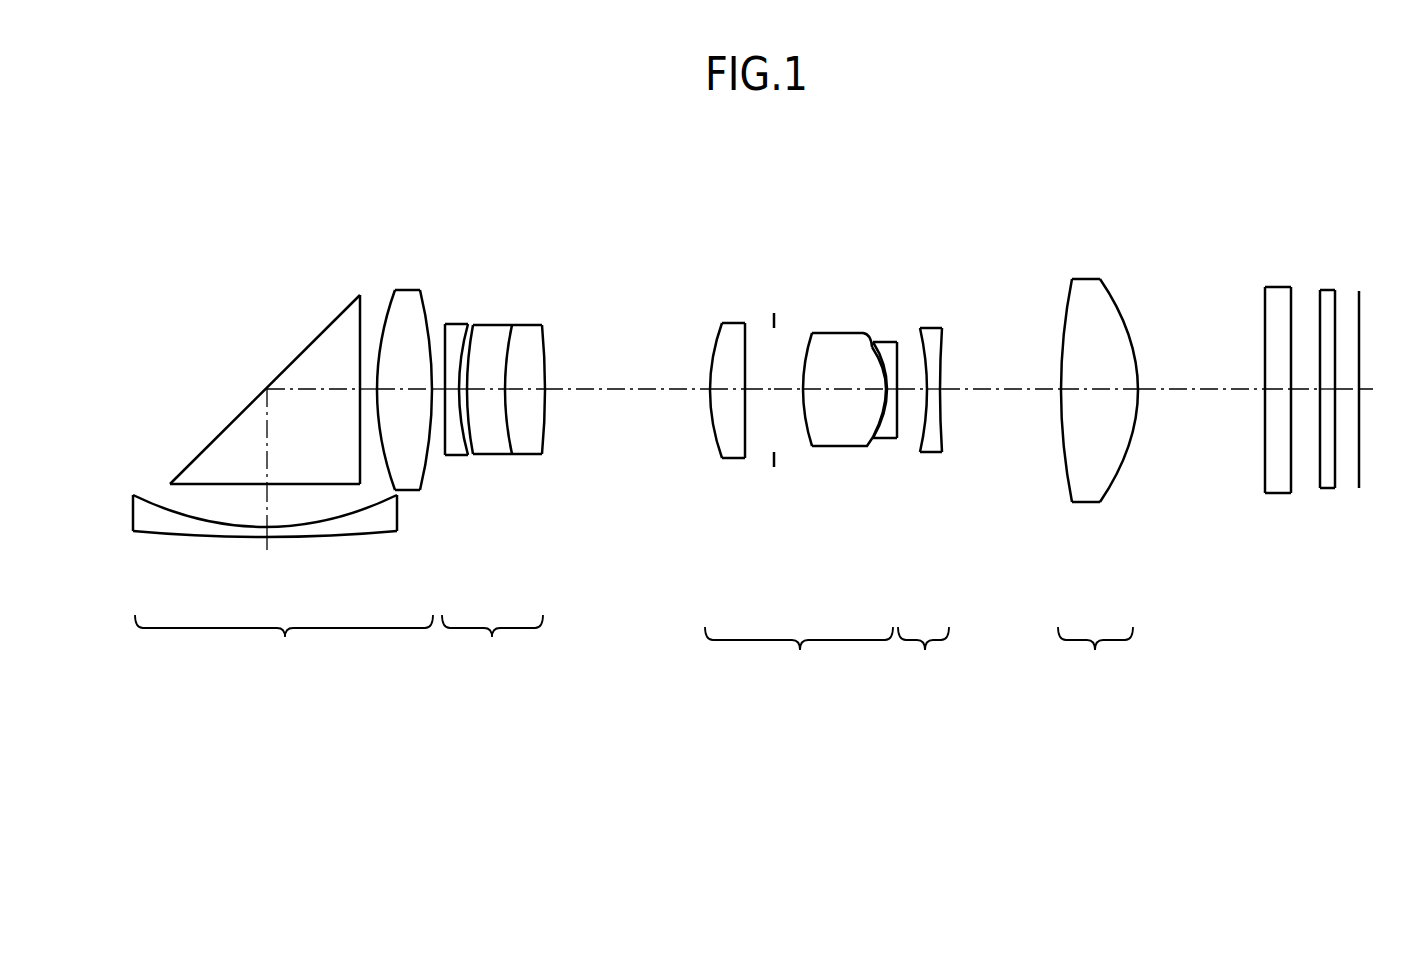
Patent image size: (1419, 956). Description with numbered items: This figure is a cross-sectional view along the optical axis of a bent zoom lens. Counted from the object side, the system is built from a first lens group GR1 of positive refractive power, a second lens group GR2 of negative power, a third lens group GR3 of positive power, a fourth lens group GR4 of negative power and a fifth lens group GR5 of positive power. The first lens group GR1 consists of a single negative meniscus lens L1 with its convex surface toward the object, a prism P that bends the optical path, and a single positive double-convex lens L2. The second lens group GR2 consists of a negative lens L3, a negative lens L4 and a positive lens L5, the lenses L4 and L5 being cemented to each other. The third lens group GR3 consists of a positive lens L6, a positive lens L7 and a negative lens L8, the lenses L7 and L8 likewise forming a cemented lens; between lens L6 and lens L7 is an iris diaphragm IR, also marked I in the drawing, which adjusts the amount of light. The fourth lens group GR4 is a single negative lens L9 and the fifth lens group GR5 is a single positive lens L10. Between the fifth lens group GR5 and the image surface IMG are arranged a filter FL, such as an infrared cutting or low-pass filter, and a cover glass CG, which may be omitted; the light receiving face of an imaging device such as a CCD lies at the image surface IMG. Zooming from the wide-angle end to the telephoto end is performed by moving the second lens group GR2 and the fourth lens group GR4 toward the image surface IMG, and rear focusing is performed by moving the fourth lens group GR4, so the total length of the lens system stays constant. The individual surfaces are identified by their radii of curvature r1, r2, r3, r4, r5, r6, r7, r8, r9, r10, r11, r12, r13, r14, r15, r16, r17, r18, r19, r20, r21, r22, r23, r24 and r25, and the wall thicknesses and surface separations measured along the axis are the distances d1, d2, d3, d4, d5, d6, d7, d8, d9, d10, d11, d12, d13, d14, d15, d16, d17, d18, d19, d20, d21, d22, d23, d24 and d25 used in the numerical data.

The meniscus lens L1 is at (248, 513).
The double-convex lens L2 is at (411, 340).
The negative lens L3 is at (466, 301).
The negative lens L4 is at (508, 331).
The positive lens L5 is at (549, 326).
The positive lens L6 is at (720, 346).
The positive lens L7 is at (837, 325).
The negative lens L8 is at (875, 321).
The negative lens L9 is at (929, 345).
The positive lens L10 is at (1093, 358).
The prism P is at (257, 367).
The iris diaphragm IR is at (782, 336).
The aperture stop mark I is at (772, 459).
The filter FL is at (1266, 328).
The cover glass CG is at (1332, 336).
The image surface IMG is at (1360, 345).
The first lens group GR1 is at (284, 643).
The second lens group GR2 is at (492, 643).
The third lens group GR3 is at (799, 655).
The fourth lens group GR4 is at (923, 655).
The fifth lens group GR5 is at (1095, 655).
The radius of curvature r1 is at (140, 534).
The radius of curvature r2 is at (134, 496).
The radius of curvature r3 is at (172, 485).
The radius of curvature r4 is at (361, 300).
The radius of curvature r5 is at (397, 292).
The radius of curvature r6 is at (435, 318).
The radius of curvature r7 is at (449, 322).
The radius of curvature r8 is at (465, 332).
The radius of curvature r9 is at (479, 336).
The radius of curvature r10 is at (509, 350).
The radius of curvature r11 is at (545, 345).
The radius of curvature r12 is at (712, 340).
The radius of curvature r13 is at (746, 342).
The radius of curvature r14 is at (775, 318).
The radius of curvature r15 is at (805, 362).
The radius of curvature r16 is at (878, 350).
The radius of curvature r17 is at (895, 350).
The radius of curvature r18 is at (924, 346).
The radius of curvature r19 is at (945, 346).
The radius of curvature r20 is at (1063, 332).
The radius of curvature r21 is at (1126, 322).
The radius of curvature r22 is at (1265, 316).
The radius of curvature r23 is at (1291, 300).
The radius of curvature r24 is at (1321, 320).
The radius of curvature r25 is at (1334, 300).
The surface separation d1 is at (268, 533).
The surface separation d2 is at (268, 505).
The surface separation d3 is at (268, 395).
The surface separation d4 is at (368, 393).
The surface separation d5 is at (404, 393).
The surface separation d6 is at (440, 393).
The surface separation d7 is at (452, 393).
The surface separation d8 is at (463, 393).
The surface separation d9 is at (490, 393).
The surface separation d10 is at (525, 393).
The surface separation d11 is at (628, 393).
The surface separation d12 is at (727, 393).
The surface separation d13 is at (760, 393).
The surface separation d14 is at (790, 393).
The surface separation d15 is at (845, 393).
The surface separation d16 is at (890, 393).
The surface separation d17 is at (912, 393).
The surface separation d18 is at (935, 393).
The surface separation d19 is at (990, 393).
The surface separation d20 is at (1085, 393).
The surface separation d21 is at (1198, 393).
The surface separation d22 is at (1278, 393).
The surface separation d23 is at (1303, 393).
The surface separation d24 is at (1327, 393).
The surface separation d25 is at (1345, 393).